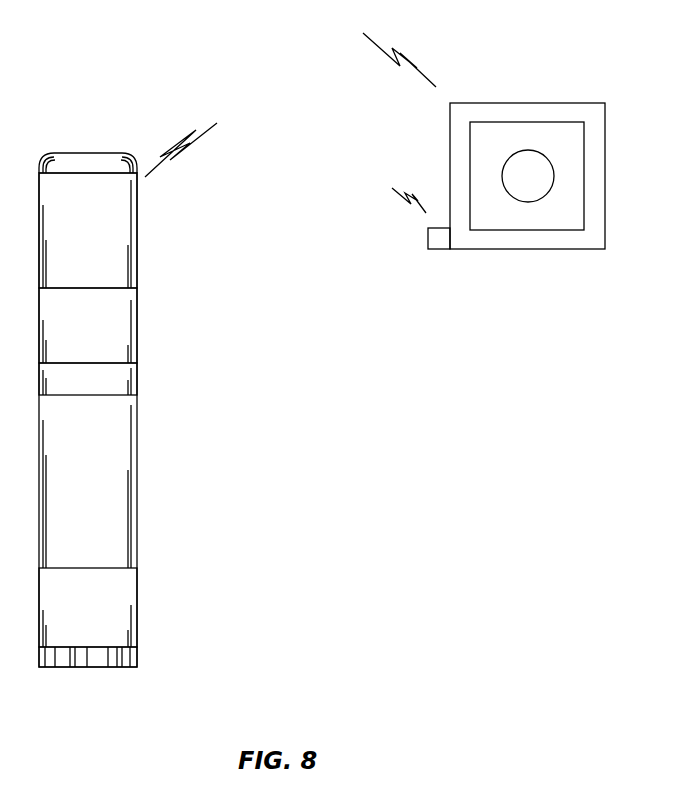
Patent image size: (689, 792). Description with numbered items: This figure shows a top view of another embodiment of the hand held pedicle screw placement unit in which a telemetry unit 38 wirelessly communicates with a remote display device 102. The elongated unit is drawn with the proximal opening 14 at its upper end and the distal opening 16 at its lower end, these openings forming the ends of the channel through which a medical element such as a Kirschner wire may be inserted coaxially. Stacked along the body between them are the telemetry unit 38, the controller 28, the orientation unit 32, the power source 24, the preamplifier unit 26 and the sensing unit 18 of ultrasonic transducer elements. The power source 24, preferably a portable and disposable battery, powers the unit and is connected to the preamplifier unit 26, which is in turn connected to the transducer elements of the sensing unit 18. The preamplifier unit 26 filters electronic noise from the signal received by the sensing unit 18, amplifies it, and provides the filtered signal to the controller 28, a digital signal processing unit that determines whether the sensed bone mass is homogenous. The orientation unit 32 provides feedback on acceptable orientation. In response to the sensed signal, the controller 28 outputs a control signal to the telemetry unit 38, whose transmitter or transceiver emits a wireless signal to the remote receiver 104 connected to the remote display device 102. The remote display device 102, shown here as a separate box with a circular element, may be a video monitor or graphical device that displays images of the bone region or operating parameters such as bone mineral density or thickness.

The proximal opening 14 is at (83, 153).
The telemetry unit 38 is at (117, 222).
The controller 28 is at (117, 320).
The orientation unit 32 is at (117, 385).
The power source 24 is at (117, 465).
The preamplifier unit 26 is at (117, 607).
The sensing unit 18 is at (135, 658).
The distal opening 16 is at (83, 667).
The remote display device 102 is at (568, 252).
The remote receiver 104 is at (436, 250).